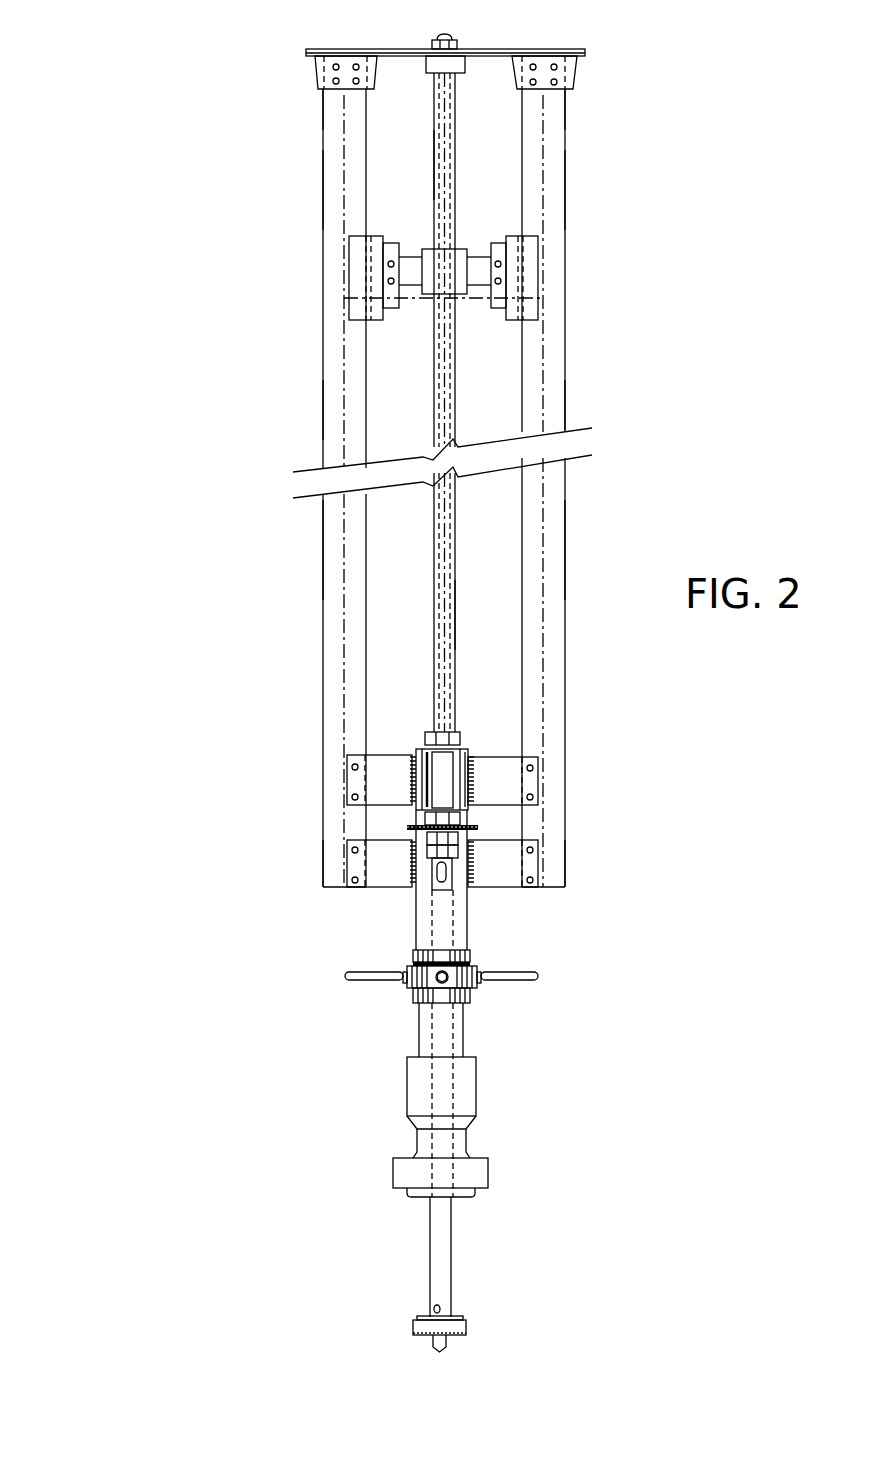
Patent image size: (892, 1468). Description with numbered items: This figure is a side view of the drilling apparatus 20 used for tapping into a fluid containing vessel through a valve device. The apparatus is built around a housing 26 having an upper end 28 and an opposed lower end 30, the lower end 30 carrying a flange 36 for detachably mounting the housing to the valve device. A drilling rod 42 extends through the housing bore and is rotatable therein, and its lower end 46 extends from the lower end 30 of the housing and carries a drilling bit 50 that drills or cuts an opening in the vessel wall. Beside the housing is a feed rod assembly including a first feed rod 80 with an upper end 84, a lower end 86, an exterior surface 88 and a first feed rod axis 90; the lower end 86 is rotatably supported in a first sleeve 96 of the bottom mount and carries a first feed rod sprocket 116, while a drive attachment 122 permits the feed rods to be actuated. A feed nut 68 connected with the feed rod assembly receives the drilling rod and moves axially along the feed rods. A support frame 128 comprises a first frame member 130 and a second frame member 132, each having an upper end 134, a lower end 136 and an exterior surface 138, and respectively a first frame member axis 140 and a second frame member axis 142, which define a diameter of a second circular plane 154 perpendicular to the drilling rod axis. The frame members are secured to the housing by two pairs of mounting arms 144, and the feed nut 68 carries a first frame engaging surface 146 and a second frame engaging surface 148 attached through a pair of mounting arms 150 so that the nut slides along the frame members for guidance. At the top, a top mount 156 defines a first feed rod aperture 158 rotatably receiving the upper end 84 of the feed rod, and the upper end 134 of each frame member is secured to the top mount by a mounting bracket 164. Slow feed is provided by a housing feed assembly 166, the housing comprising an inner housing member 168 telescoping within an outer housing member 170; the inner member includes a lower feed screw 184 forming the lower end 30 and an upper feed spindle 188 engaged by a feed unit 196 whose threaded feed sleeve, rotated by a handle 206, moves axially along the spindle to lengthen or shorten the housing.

The drilling apparatus 20 is at (196, 232).
The housing 26 is at (466, 932).
The upper end of the housing 28 is at (470, 749).
The lower end of the housing 30 is at (465, 1197).
The flange 36 is at (475, 1175).
The drilling rod 42 is at (446, 1233).
The lower end of the drilling rod 46 is at (446, 1288).
The drilling bit 50 is at (413, 1318).
The feed nut 68 is at (478, 263).
The first feed rod 80 is at (448, 556).
The upper end of the feed rod 84 is at (448, 88).
The lower end of the feed rod 86 is at (445, 728).
The exterior surface of the feed rod 88 is at (448, 610).
The first feed rod axis 90 is at (448, 140).
The first sleeve 96 is at (445, 778).
The first feed rod sprocket 116 is at (480, 827).
The drive attachment 122 is at (440, 877).
The support frame 128 is at (572, 310).
The first frame member 130 is at (325, 333).
The second frame member 132 is at (566, 355).
The upper end of the frame member 134 is at (336, 100).
The lower end of the frame member 136 is at (330, 875).
The exterior surface of the frame member 138 is at (323, 548).
The first frame member axis 140 is at (346, 197).
The second frame member axis 142 is at (545, 197).
The mounting arms 144 is at (372, 862).
The first frame engaging surface 146 is at (345, 288).
The second frame engaging surface 148 is at (545, 280).
The mounting arms of the feed nut 150 is at (410, 255).
The second circular plane 154 is at (358, 300).
The top mount 156 is at (400, 52).
The first feed rod aperture 158 is at (456, 38).
The mounting bracket 164 is at (318, 72).
The housing feed assembly 166 is at (582, 1008).
The inner housing member 168 is at (463, 1043).
The outer housing member 170 is at (415, 752).
The lower feed screw 184 is at (467, 1103).
The upper feed spindle 188 is at (453, 1027).
The feed unit 196 is at (548, 977).
The handle 206 is at (371, 976).